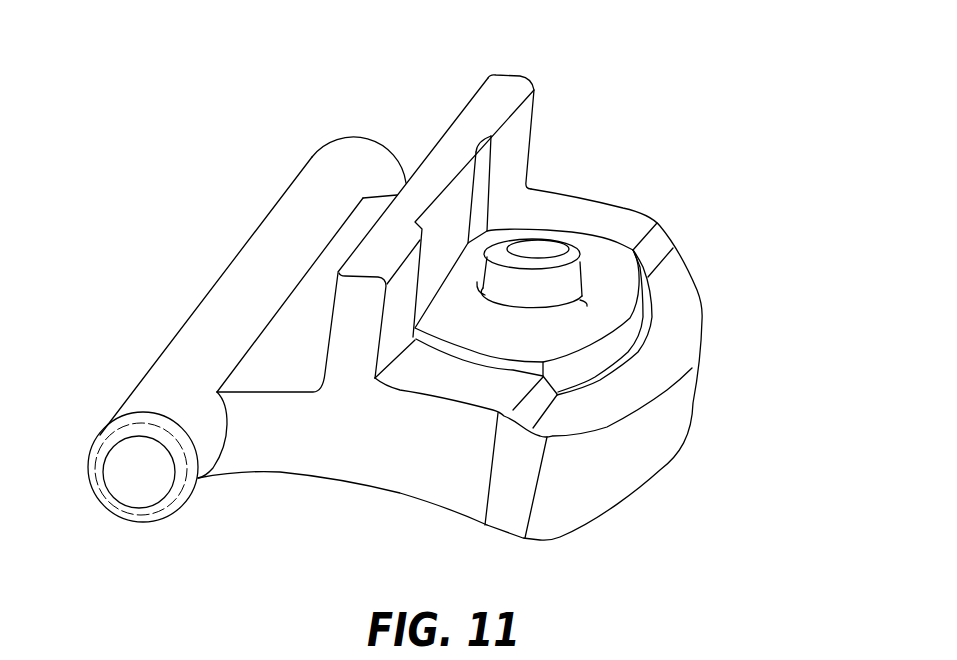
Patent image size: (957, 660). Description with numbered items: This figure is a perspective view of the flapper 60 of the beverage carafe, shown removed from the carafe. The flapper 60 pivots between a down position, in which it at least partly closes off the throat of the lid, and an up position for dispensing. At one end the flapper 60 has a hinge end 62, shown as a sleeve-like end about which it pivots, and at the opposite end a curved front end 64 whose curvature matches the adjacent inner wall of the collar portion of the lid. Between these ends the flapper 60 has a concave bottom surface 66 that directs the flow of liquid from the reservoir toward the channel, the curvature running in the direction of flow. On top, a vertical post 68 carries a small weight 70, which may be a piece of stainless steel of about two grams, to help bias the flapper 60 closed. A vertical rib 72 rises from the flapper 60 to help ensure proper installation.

The flapper 60 is at (718, 93).
The hinge end 62 is at (140, 477).
The curved front end 64 is at (675, 413).
The concave bottom surface 66 is at (343, 488).
The vertical post 68 is at (540, 248).
The weight 70 is at (607, 297).
The vertical rib 72 is at (507, 89).